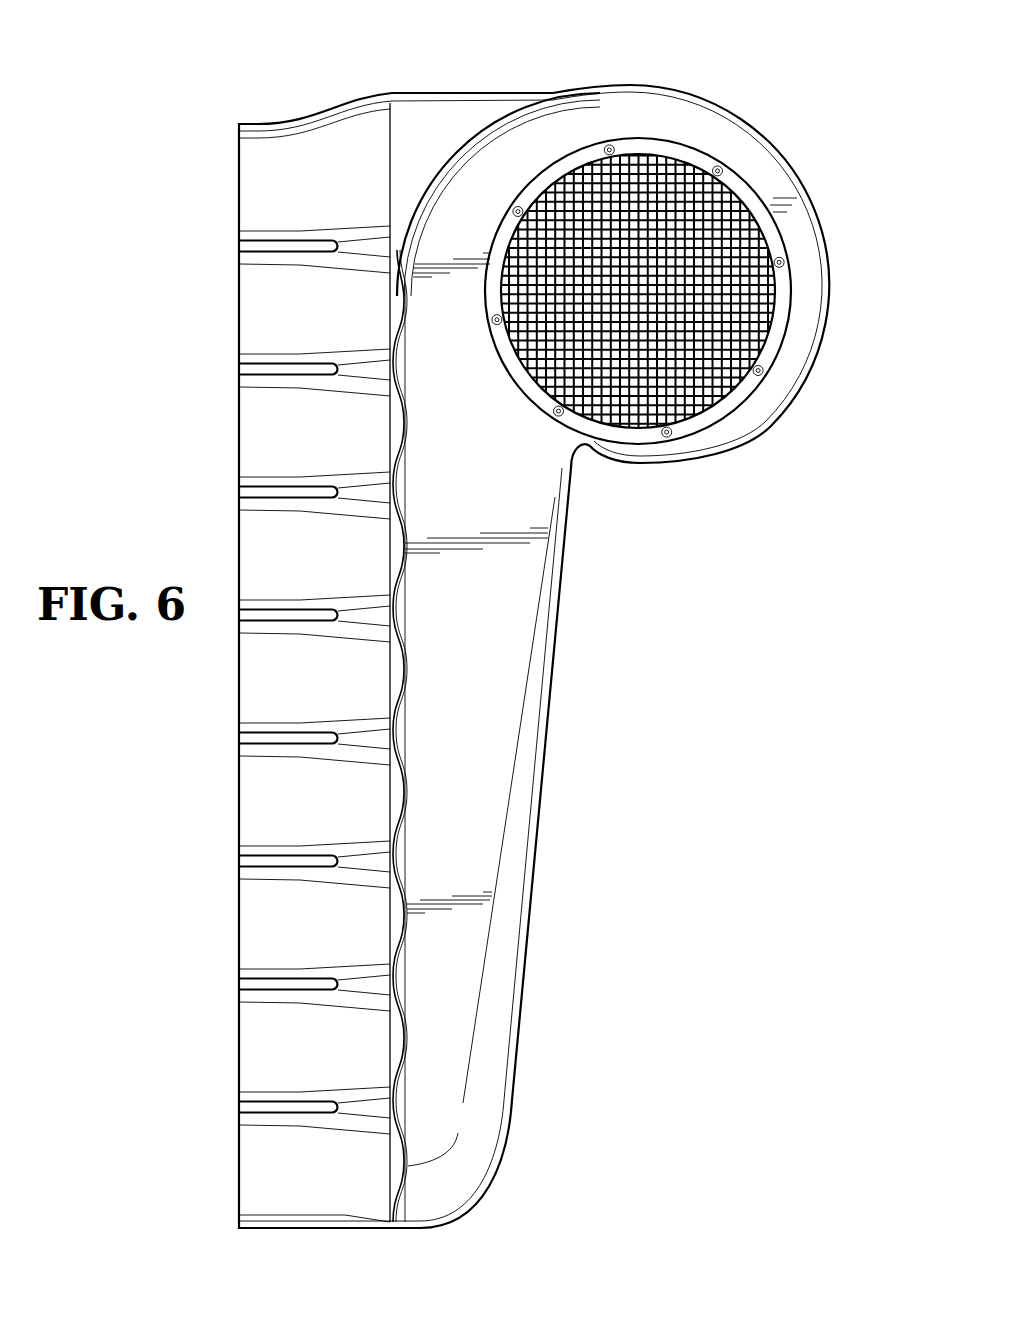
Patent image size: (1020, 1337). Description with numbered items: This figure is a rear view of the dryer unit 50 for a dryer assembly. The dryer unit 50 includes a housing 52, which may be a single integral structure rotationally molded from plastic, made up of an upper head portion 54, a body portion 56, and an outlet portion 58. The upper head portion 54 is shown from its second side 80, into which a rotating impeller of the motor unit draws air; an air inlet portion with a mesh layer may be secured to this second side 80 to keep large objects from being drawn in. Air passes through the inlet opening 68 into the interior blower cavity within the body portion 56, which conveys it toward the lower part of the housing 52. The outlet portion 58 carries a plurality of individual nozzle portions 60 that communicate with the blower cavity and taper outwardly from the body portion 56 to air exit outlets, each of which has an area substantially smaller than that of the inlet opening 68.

The dryer unit 50 is at (527, 616).
The housing 52 is at (441, 848).
The upper head portion 54 is at (833, 264).
The body portion 56 is at (557, 632).
The outlet portion 58 is at (265, 1150).
The nozzle portions 60 is at (262, 808).
The inlet opening 68 is at (637, 162).
The second side 80 is at (795, 352).